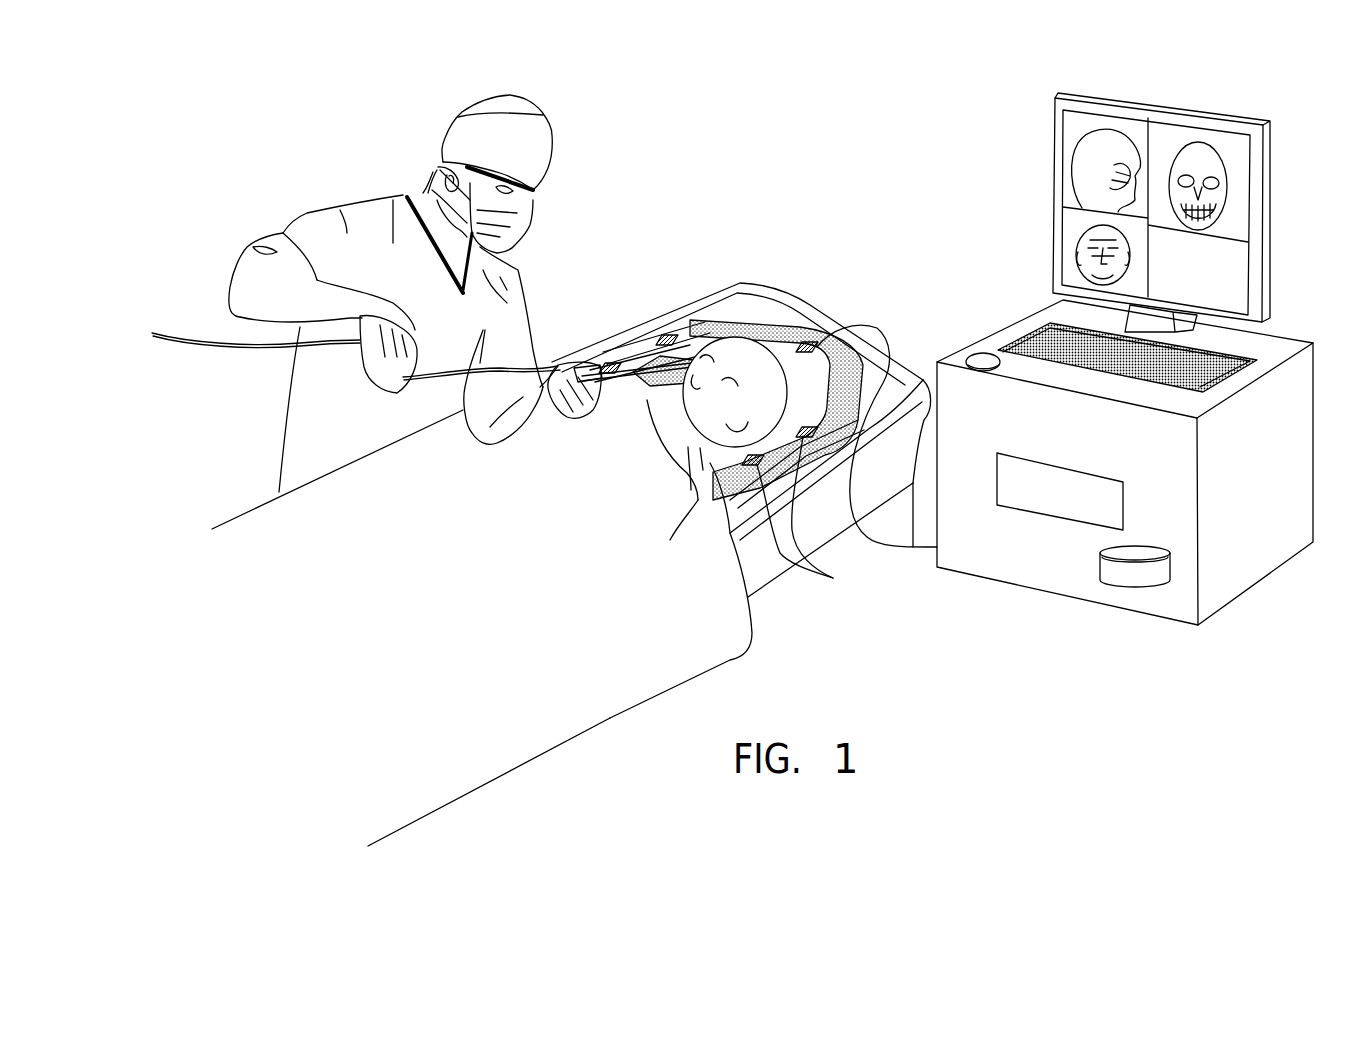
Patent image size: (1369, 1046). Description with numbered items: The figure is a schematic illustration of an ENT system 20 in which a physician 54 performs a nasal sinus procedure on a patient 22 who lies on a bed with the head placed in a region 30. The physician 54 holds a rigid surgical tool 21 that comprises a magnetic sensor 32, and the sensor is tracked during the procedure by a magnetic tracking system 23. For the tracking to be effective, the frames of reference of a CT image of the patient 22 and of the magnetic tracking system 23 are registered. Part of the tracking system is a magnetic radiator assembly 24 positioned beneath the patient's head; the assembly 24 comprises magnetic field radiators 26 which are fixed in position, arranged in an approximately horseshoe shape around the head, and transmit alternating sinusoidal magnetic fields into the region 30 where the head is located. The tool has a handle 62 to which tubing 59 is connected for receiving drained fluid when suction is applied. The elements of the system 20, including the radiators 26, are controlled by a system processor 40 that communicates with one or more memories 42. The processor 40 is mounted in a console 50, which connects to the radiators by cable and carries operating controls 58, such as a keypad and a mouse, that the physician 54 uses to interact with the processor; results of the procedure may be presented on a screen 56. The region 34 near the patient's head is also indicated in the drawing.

The ENT system 20 is at (677, 168).
The rigid surgical tool 21 is at (650, 460).
The patient 22 is at (690, 503).
The magnetic tracking system 23 is at (828, 610).
The magnetic radiator assembly 24 is at (763, 318).
The magnetic field radiators 26 is at (610, 360).
The region 30 is at (680, 290).
The magnetic sensor 32 is at (593, 272).
The distal end region 34 is at (723, 367).
The system processor 40 is at (1053, 465).
The memories 42 is at (1153, 545).
The console 50 is at (1245, 577).
The physician 54 is at (443, 142).
The screen 56 is at (1130, 110).
The operating controls 58 is at (1037, 333).
The tubing 59 is at (585, 368).
The handle 62 is at (605, 410).